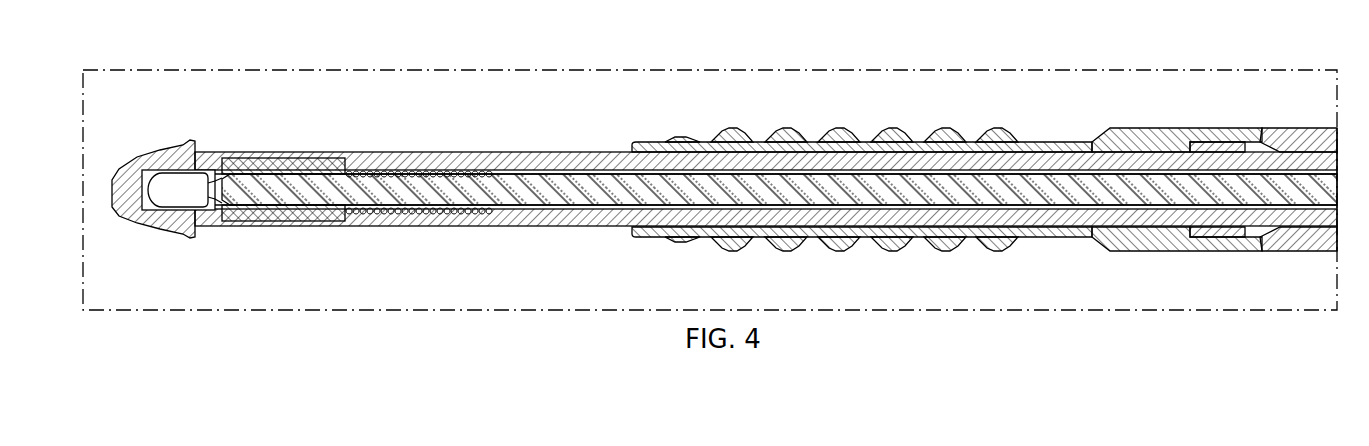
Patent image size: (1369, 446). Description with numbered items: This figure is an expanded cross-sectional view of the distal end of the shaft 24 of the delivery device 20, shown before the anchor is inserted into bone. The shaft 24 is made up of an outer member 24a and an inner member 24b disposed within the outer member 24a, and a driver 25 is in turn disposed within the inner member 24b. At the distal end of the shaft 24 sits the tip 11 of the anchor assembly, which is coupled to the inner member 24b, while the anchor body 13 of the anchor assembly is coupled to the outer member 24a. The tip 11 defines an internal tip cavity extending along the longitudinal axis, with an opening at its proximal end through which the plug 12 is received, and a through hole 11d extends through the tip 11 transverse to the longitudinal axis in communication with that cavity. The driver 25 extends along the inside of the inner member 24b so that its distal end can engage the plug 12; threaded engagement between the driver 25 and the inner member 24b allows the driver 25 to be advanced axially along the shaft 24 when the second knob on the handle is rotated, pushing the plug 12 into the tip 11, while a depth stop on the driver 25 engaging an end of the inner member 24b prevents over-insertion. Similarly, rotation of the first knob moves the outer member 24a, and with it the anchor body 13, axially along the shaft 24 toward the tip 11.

The delivery device 20 is at (868, 71).
The tip 11 is at (140, 214).
The through hole 11d is at (188, 192).
The plug 12 is at (300, 163).
The driver 25 is at (443, 193).
The anchor body 13 is at (893, 253).
The inner member 24b is at (1052, 140).
The shaft 24 is at (1200, 135).
The outer member 24a is at (1300, 140).